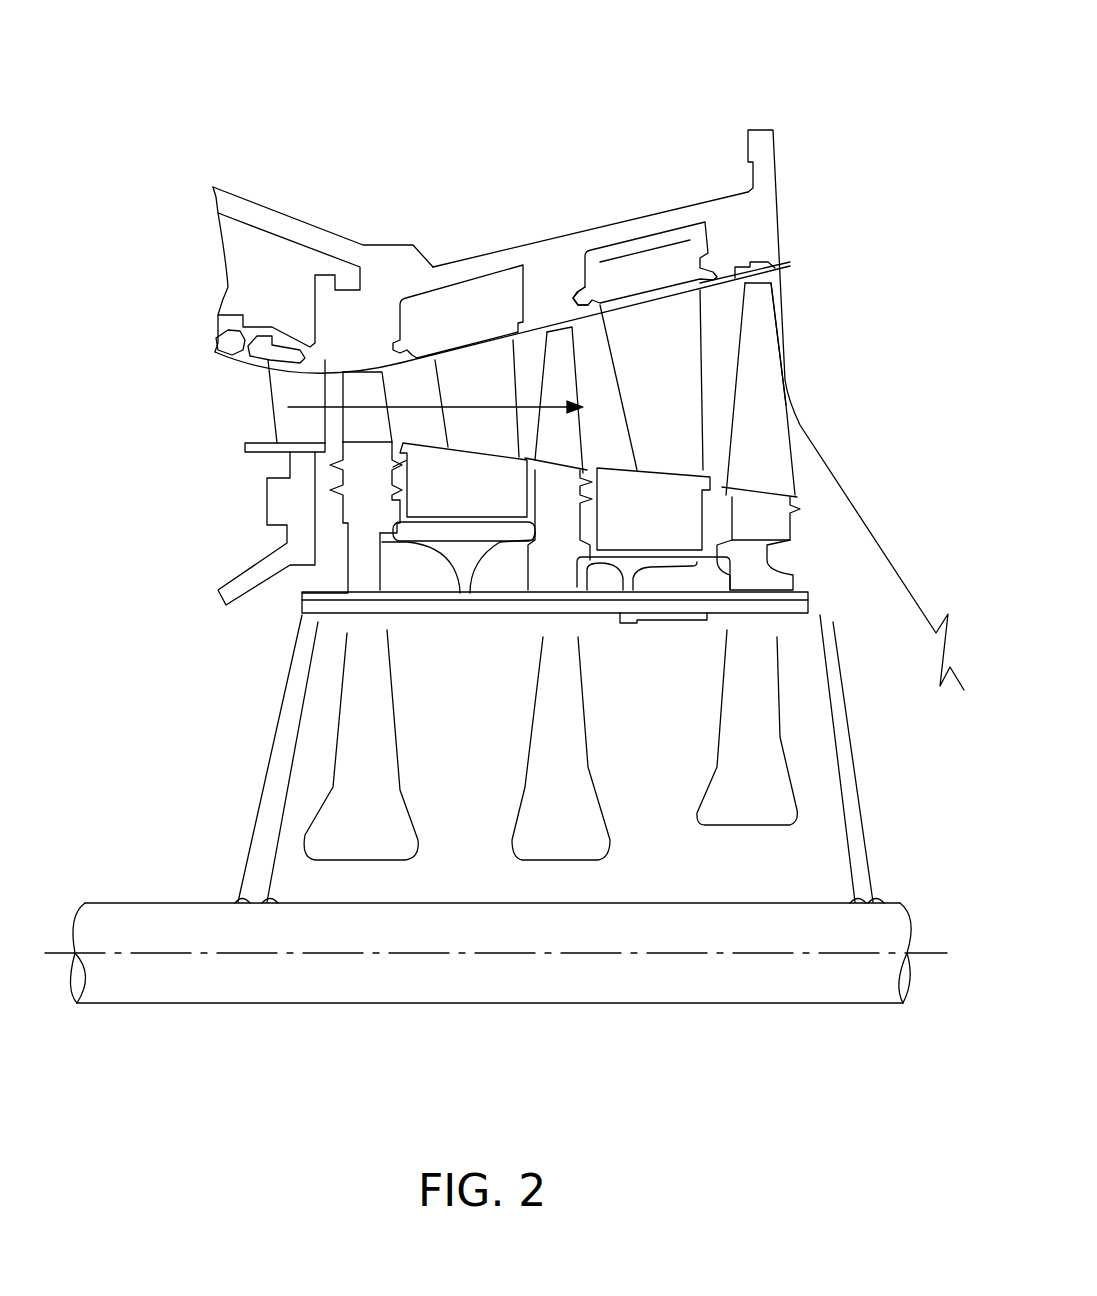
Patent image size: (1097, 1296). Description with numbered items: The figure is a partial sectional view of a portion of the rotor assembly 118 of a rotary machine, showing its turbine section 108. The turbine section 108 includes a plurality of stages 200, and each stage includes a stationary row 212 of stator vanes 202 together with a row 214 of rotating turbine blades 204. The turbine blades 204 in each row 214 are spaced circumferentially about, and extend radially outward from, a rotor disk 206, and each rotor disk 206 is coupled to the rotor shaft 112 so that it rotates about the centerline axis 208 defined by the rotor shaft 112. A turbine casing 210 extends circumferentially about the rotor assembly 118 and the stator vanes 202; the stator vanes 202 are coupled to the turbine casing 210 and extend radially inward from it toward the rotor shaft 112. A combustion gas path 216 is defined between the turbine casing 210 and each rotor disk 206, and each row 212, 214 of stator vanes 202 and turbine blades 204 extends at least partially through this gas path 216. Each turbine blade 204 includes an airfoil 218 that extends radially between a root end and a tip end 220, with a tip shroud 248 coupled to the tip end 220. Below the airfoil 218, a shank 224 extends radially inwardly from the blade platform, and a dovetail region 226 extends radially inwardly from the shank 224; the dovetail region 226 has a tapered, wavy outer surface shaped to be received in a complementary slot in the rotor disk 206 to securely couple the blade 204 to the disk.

The turbine section 108 is at (400, 150).
The rotor shaft 112 is at (647, 903).
The rotor assembly 118 is at (812, 65).
The stages 200 is at (412, 327).
The stator vanes 202 is at (555, 441).
The turbine blades 204 is at (363, 392).
The rotor disk 206 is at (368, 748).
The centerline axis 208 is at (143, 953).
The turbine casing 210 is at (532, 253).
The stationary row of stator vanes 212 is at (577, 283).
The row of rotating turbine blades 214 is at (632, 260).
The combustion gas path 216 is at (296, 407).
The airfoil 218 is at (767, 452).
The tip end 220 is at (784, 262).
The shank 224 is at (771, 510).
The dovetail region 226 is at (771, 533).
The tip shroud 248 is at (755, 263).